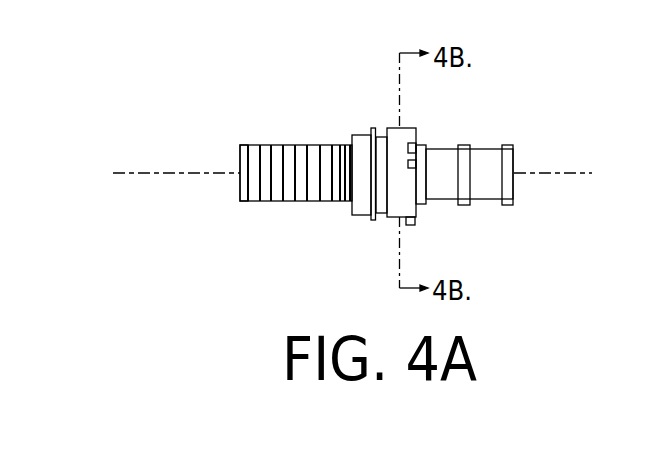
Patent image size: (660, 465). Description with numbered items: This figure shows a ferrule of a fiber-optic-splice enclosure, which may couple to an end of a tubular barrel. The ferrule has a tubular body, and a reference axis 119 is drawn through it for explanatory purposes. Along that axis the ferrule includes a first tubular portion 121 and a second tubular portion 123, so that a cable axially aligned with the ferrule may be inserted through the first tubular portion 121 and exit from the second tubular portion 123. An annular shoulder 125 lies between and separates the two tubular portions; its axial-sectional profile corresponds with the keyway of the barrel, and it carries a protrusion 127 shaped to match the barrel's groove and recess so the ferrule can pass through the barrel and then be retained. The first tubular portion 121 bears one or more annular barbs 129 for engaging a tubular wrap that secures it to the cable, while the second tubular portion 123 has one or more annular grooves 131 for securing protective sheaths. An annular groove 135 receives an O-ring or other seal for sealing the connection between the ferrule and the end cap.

The reference axis 119 is at (140, 173).
The first tubular portion 121 is at (350, 132).
The second tubular portion 123 is at (515, 132).
The annular shoulder 125 is at (417, 207).
The protrusion 127 is at (413, 168).
The annular barbs 129 is at (255, 203).
The annular grooves 131 is at (487, 201).
The annular groove 135 is at (380, 129).